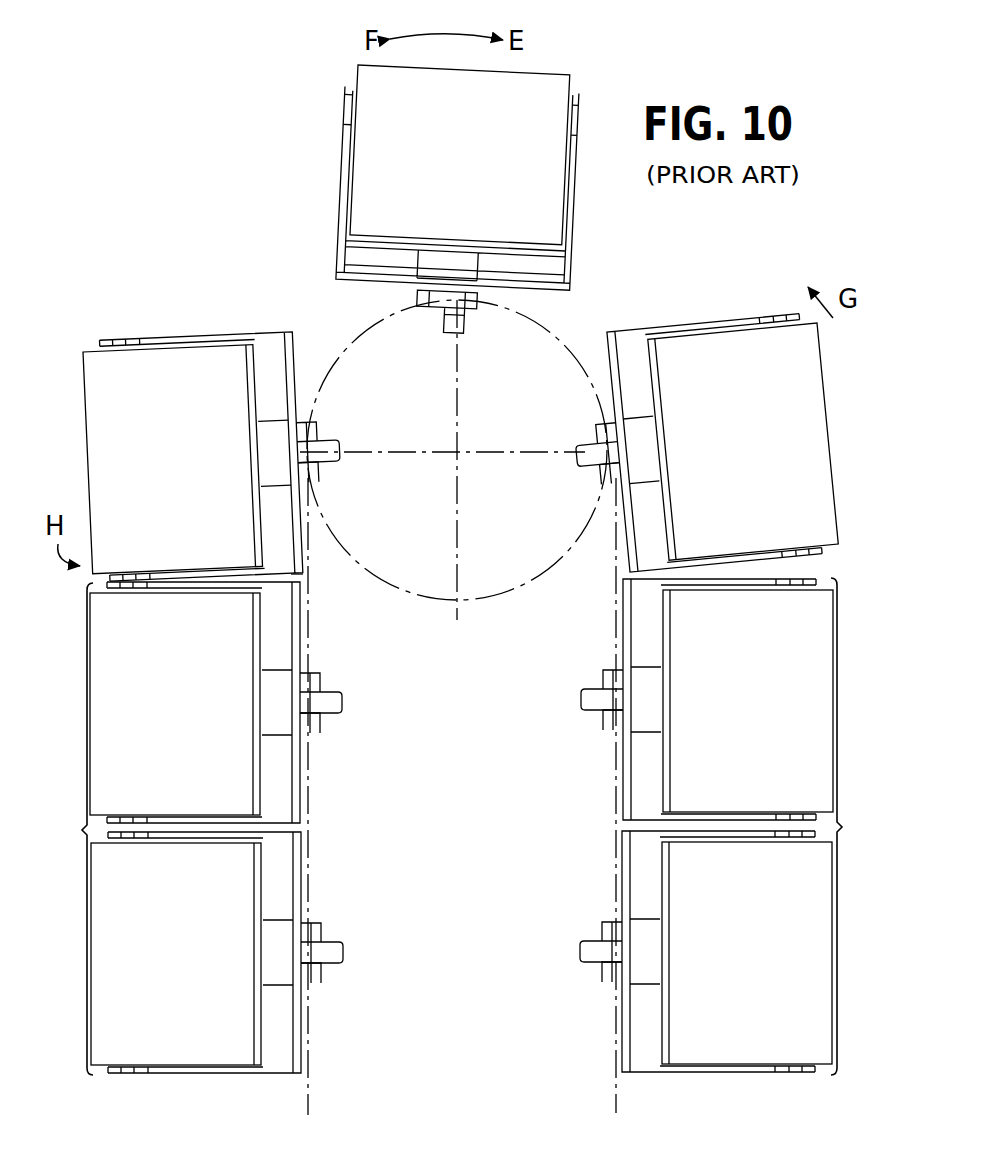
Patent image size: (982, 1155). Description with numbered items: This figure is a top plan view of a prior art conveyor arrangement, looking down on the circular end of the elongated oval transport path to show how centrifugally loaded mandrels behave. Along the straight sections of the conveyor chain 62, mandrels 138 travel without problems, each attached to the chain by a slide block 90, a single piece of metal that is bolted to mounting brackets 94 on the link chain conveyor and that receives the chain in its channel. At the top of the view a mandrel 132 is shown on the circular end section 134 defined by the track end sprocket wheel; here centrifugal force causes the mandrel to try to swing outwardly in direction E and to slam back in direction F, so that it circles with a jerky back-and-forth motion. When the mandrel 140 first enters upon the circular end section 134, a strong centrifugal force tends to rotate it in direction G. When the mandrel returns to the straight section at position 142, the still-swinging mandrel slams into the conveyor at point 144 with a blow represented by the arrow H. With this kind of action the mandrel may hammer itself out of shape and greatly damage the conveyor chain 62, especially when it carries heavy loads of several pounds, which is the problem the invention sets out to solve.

The mandrel 132 is at (478, 186).
The slide block 90 is at (417, 291).
The mounting brackets 94 is at (592, 700).
The position (return to straight section) 142 is at (89, 373).
The mandrel 140 is at (814, 353).
The point (of impact) 144 is at (296, 572).
The circular end section 134 is at (447, 605).
The mandrels 138 is at (471, 826).
The conveyor chain 62 is at (312, 883).